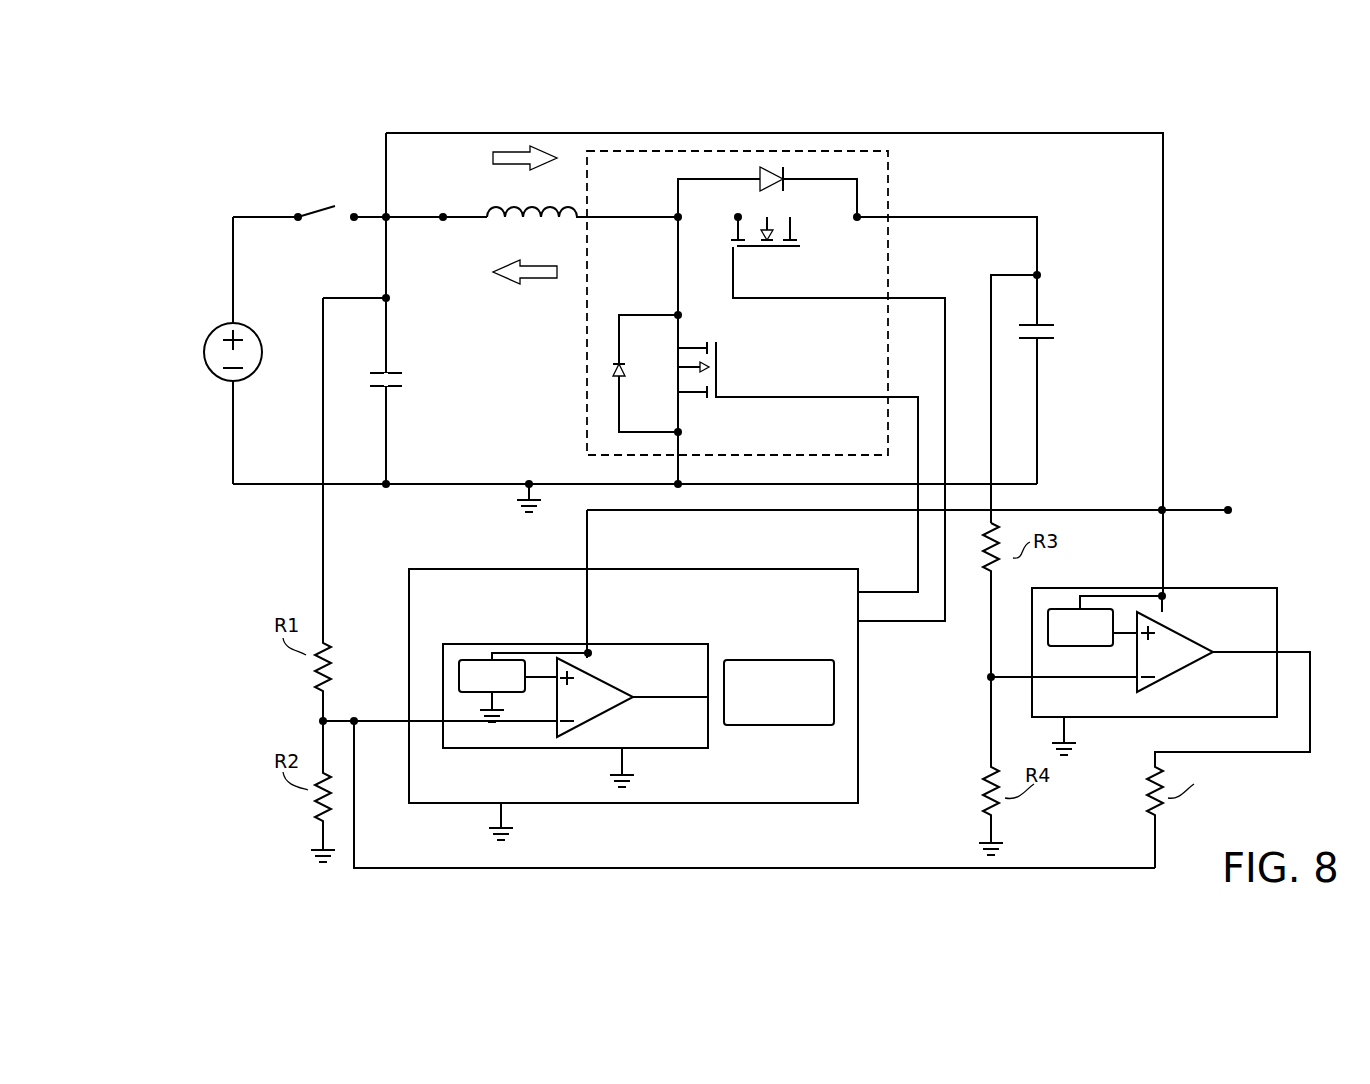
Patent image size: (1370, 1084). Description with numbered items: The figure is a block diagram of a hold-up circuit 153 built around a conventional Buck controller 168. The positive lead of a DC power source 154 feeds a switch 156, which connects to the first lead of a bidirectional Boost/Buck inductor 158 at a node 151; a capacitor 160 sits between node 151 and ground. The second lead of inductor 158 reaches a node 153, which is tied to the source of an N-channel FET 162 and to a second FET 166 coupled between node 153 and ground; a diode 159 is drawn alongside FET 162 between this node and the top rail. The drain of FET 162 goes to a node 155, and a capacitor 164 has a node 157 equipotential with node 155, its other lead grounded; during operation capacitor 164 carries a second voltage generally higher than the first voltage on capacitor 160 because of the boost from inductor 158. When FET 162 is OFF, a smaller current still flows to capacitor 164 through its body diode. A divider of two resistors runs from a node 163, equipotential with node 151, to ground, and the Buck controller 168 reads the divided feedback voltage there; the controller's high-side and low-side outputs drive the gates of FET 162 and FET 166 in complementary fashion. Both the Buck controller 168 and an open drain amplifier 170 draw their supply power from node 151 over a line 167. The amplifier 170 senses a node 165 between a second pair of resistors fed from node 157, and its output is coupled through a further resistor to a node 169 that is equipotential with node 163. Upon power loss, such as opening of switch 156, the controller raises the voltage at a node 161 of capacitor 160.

The node 151 is at (384, 220).
The node 153 is at (677, 219).
The DC power source 154 is at (262, 356).
The node 155 is at (860, 214).
The switch 156 is at (328, 201).
The node 157 is at (1034, 274).
The bidirectional Boost/Buck inductor 158 is at (578, 200).
The diode 159 is at (788, 172).
The capacitor 160 is at (405, 392).
The node 161 is at (390, 300).
The N-channel FET 162 is at (780, 256).
The node 163 is at (319, 720).
The capacitor 164 is at (1047, 312).
The node 165 is at (996, 673).
The second FET 166 is at (727, 366).
The line 167 is at (1128, 468).
The conventional Buck controller 168 is at (783, 820).
The node 169 is at (355, 717).
The open drain O/P 170 is at (1218, 573).